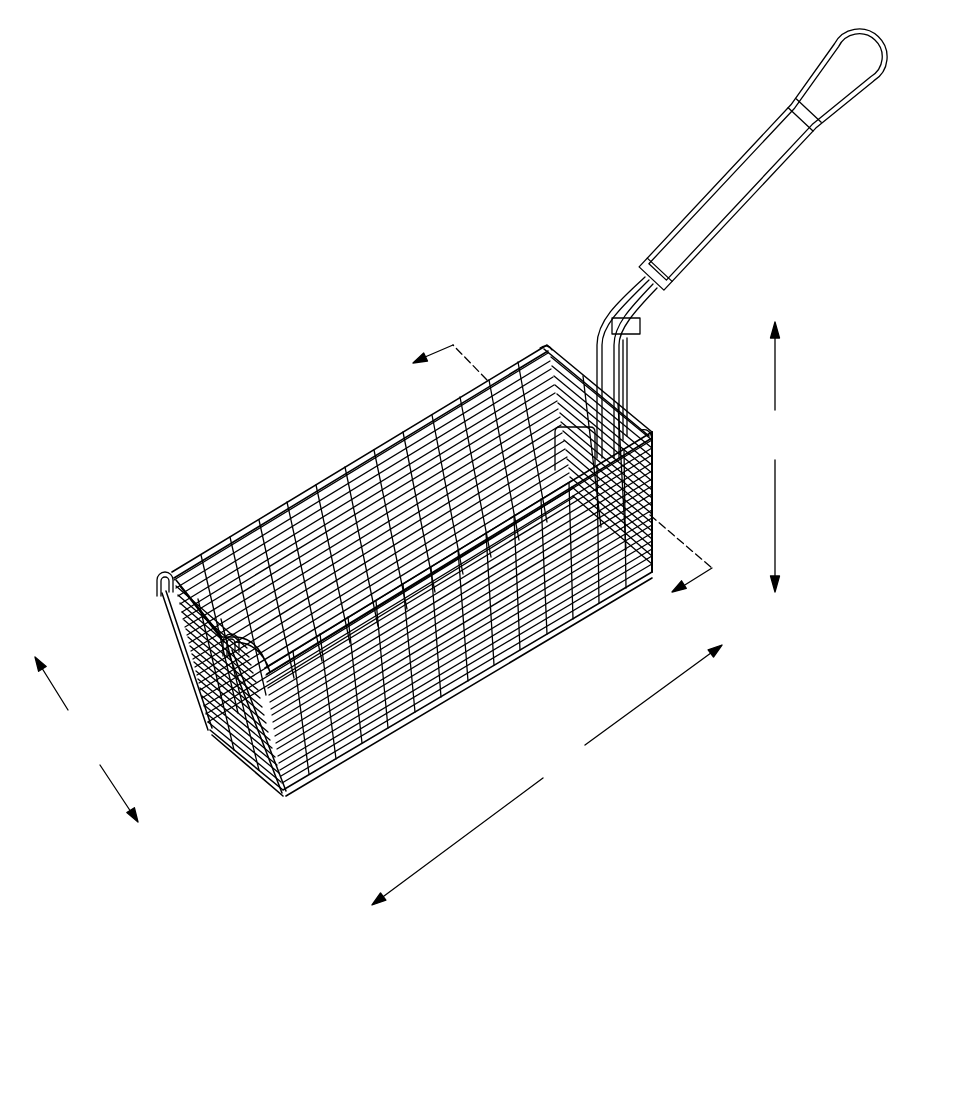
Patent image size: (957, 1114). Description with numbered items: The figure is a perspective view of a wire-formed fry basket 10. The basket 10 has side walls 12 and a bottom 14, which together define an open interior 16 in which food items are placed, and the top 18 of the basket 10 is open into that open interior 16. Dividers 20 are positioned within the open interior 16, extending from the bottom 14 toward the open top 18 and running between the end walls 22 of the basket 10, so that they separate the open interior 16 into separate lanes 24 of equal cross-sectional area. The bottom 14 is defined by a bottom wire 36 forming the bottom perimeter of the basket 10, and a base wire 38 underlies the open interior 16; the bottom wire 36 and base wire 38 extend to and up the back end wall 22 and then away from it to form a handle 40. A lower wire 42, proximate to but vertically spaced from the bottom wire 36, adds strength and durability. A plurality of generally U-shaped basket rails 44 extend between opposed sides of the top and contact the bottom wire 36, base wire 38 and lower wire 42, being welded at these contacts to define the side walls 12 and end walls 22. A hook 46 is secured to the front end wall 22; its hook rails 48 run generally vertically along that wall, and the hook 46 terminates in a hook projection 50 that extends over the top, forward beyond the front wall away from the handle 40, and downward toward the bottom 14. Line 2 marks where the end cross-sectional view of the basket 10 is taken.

The line 2- 2 is at (552, 481).
The basket 10 is at (413, 267).
The side walls 12 is at (318, 490).
The bottom 14 is at (488, 697).
The open interior 16 is at (372, 445).
The top 18 is at (157, 578).
The dividers 20 is at (405, 438).
The end walls 22 is at (655, 483).
The lanes 24 is at (540, 360).
The bottom wire 36 is at (598, 340).
The base wire 38 is at (626, 330).
The handle 40 is at (651, 213).
The lower wire 42 is at (563, 622).
The basket rails 44 is at (336, 445).
The hook 46 is at (139, 604).
The hook rails 48 is at (192, 690).
The hook projection 50 is at (170, 630).